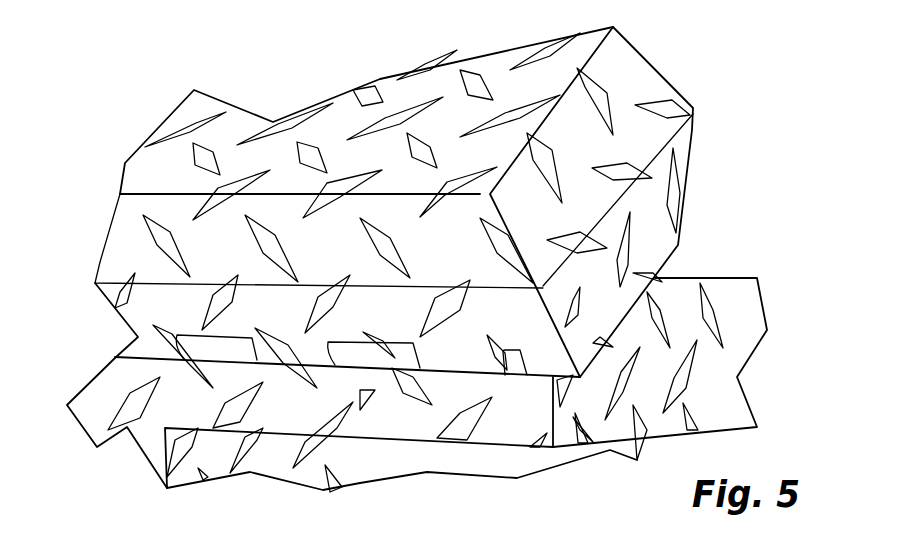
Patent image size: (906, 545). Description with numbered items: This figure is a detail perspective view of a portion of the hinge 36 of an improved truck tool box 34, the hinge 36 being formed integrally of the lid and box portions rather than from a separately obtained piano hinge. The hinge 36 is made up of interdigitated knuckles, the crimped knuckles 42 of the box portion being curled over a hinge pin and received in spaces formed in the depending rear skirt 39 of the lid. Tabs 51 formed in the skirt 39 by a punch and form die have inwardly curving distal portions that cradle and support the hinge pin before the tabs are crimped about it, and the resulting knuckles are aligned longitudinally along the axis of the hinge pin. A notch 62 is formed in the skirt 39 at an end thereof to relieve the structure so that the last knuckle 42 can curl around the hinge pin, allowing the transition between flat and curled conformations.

The tool box 34 is at (720, 233).
The hinge 36 is at (343, 375).
The depending rear skirt 39 is at (142, 315).
The crimped knuckle 42 is at (223, 350).
The tab 51 is at (460, 362).
The notch 62 is at (518, 340).